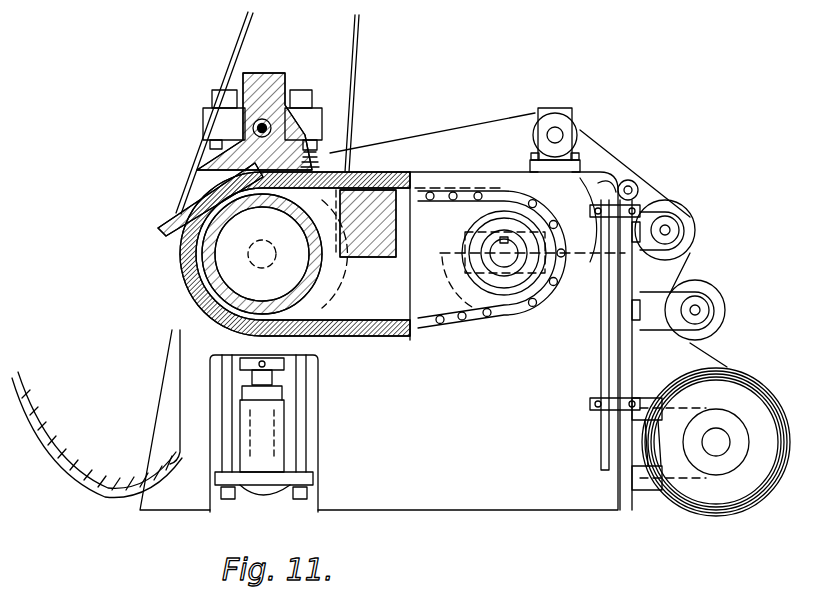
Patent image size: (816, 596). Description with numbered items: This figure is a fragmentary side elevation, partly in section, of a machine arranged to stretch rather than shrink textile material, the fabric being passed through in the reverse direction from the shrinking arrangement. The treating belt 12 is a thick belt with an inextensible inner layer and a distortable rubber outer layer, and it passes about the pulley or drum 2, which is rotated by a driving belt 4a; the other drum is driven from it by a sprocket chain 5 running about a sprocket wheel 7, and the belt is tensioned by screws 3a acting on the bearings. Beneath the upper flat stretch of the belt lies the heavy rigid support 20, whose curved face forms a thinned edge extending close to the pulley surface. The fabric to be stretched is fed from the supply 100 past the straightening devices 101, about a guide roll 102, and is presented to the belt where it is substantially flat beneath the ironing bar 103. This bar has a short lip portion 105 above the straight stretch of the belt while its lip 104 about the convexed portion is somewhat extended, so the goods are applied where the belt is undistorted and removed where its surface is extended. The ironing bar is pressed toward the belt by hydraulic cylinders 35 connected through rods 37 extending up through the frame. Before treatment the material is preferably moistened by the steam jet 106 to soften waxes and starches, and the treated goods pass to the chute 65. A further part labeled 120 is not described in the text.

The pulley or drum 2 is at (196, 286).
The screws 3a is at (698, 270).
The driving belt 4a is at (360, 70).
The sprocket chain 5 is at (520, 303).
The sprocket wheel 7 is at (547, 293).
The belt 12 is at (380, 338).
The heavy rigid support 20 is at (384, 258).
The hydraulic cylinders 35 is at (275, 455).
The rods 37 is at (317, 410).
The chute 65 is at (74, 486).
The supply 100 is at (706, 492).
The straightening devices 101 is at (716, 300).
The guide roll 102 is at (578, 118).
The ironing bar 103 is at (275, 70).
The lip 104 is at (186, 198).
The short lip portion 105 is at (312, 162).
The steam jet 106 is at (640, 184).
The base 120 is at (511, 588).